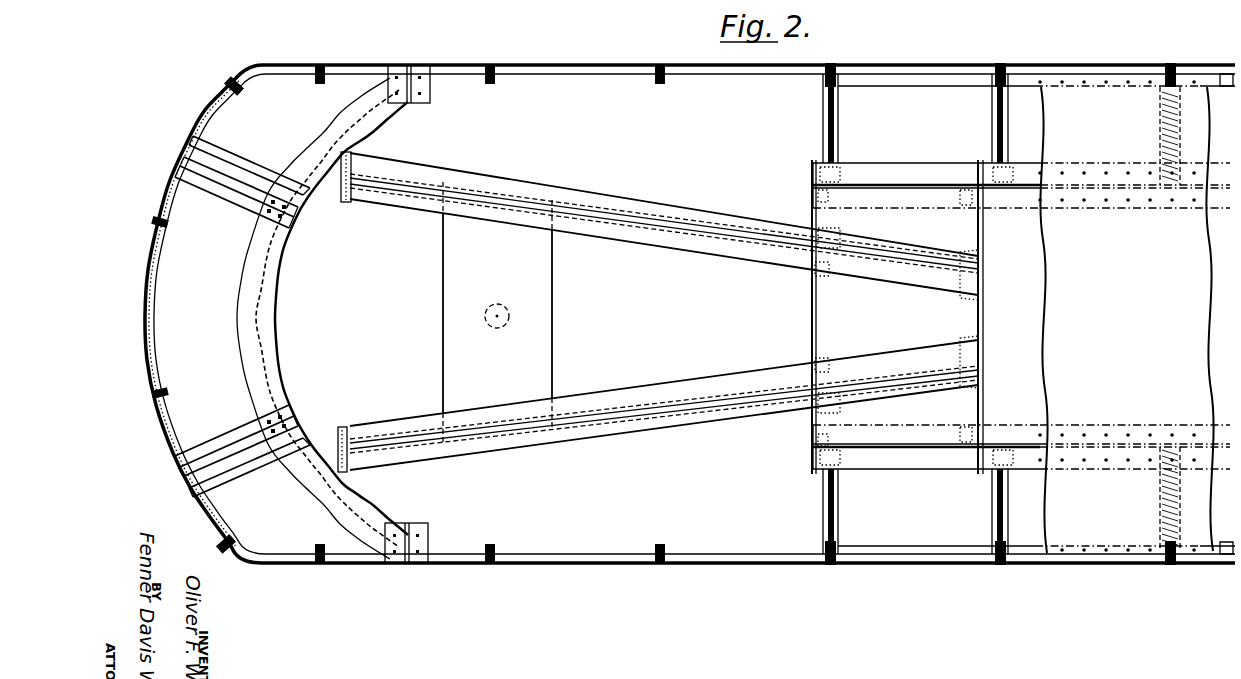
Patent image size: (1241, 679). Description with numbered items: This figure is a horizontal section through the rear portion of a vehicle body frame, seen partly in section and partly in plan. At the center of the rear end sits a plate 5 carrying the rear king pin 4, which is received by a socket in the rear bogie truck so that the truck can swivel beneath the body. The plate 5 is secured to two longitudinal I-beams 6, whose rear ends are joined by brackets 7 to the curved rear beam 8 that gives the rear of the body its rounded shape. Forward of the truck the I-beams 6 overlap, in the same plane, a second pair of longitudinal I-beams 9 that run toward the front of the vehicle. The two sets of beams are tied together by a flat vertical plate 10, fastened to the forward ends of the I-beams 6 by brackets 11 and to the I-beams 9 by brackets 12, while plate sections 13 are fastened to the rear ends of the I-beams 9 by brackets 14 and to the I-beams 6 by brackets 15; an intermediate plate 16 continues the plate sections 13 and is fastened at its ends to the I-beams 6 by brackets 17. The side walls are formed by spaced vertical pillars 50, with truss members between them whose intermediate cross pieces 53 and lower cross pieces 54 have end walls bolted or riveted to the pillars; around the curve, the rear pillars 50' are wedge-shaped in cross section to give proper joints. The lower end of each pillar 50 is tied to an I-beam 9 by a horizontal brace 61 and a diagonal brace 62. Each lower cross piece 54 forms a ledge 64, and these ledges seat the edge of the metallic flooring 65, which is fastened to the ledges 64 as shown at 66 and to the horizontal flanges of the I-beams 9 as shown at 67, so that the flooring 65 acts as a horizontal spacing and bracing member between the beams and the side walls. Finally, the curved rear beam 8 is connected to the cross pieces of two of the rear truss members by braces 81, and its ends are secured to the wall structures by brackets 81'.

The rear king pin 4 is at (494, 326).
The plate 5 is at (553, 343).
The longitudinal I-beams 6 is at (423, 203).
The brackets 7 is at (331, 183).
The curved rear beam 8 is at (250, 292).
The longitudinal I-beams 9 is at (1023, 205).
The flat vertical plate 10 is at (984, 305).
The brackets 11 is at (972, 246).
The brackets 12 is at (971, 196).
The plate sections 13 is at (813, 209).
The brackets 14 is at (823, 196).
The brackets 15 is at (832, 240).
The intermediate plate 16 is at (811, 305).
The brackets 17 is at (823, 268).
The vertical pillars 50 is at (702, 313).
The rear pillars 50' is at (135, 296).
The intermediate horizontal cross piece 53 is at (572, 63).
The lower horizontal cross piece 54 is at (921, 72).
The horizontal brace 61 is at (823, 498).
The diagonal brace 62 is at (836, 494).
The ledge 64 is at (1017, 87).
The metallic flooring 65 is at (1126, 320).
The fastening of flooring to ledges 66 is at (1083, 85).
The fastening of flooring to I-beam flanges 67 is at (1063, 200).
The braces 81 is at (242, 316).
The brackets 81' is at (427, 314).